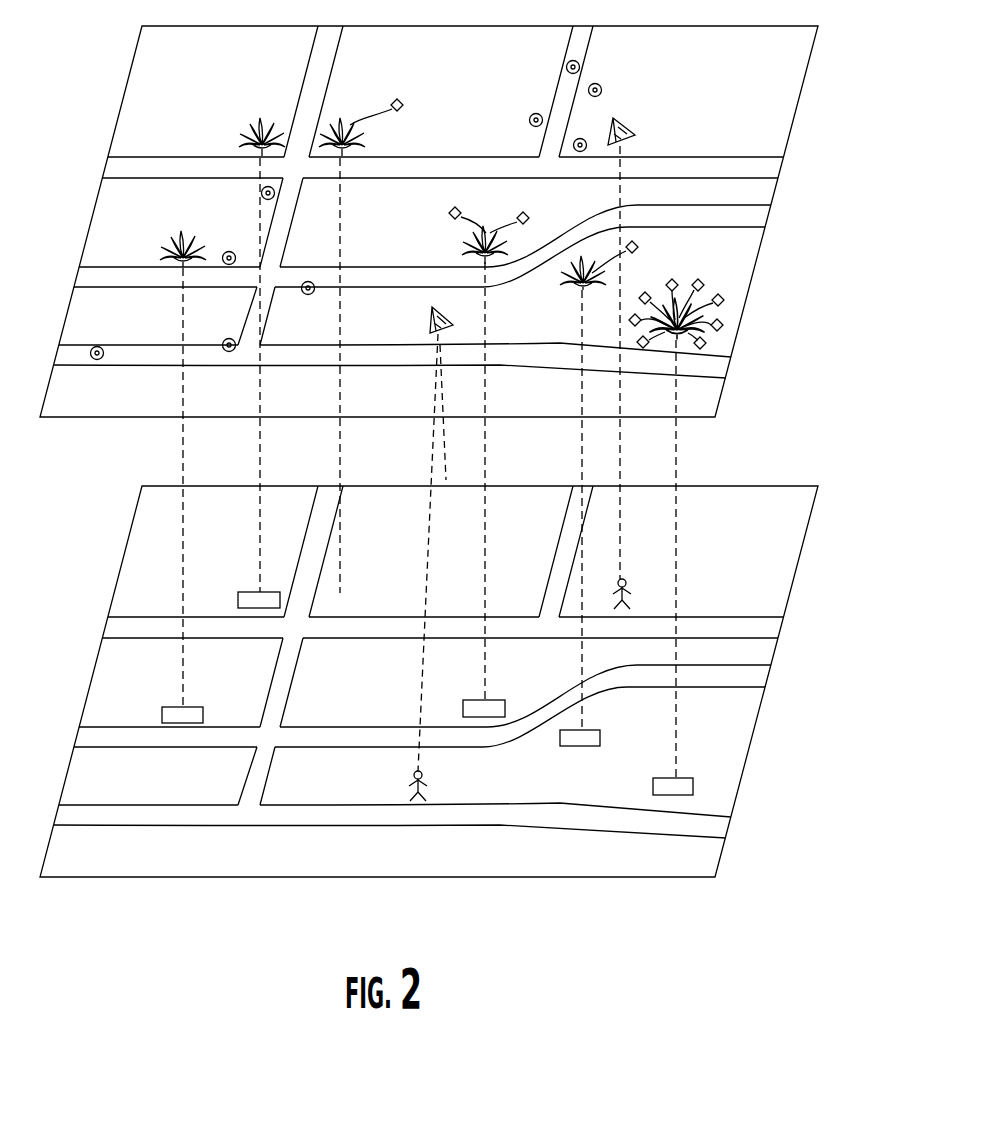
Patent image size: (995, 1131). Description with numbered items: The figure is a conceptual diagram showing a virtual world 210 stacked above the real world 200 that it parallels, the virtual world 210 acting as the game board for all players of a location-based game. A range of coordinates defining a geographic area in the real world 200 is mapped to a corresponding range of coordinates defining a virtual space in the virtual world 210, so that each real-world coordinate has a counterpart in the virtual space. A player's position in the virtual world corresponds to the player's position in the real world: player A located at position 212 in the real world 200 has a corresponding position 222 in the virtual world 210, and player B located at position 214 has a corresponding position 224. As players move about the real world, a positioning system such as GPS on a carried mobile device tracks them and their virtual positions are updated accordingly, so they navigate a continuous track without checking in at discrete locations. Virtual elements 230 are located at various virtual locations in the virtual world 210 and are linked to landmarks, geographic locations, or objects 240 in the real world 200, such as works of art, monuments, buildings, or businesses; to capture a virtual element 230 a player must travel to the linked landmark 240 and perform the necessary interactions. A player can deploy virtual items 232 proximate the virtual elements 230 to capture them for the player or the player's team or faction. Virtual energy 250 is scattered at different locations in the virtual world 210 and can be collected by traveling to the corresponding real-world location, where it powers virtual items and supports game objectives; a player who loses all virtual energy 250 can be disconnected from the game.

The real world 200 is at (787, 593).
The virtual world 210 is at (788, 137).
The position of player A 212 is at (413, 776).
The position of player B 214 is at (630, 578).
The corresponding position of player A 222 is at (454, 325).
The corresponding position of player B 224 is at (639, 131).
The virtual element 230 is at (260, 122).
The virtual item 232 is at (404, 100).
The landmark or object 240 is at (252, 592).
The virtual energy 250 is at (601, 88).